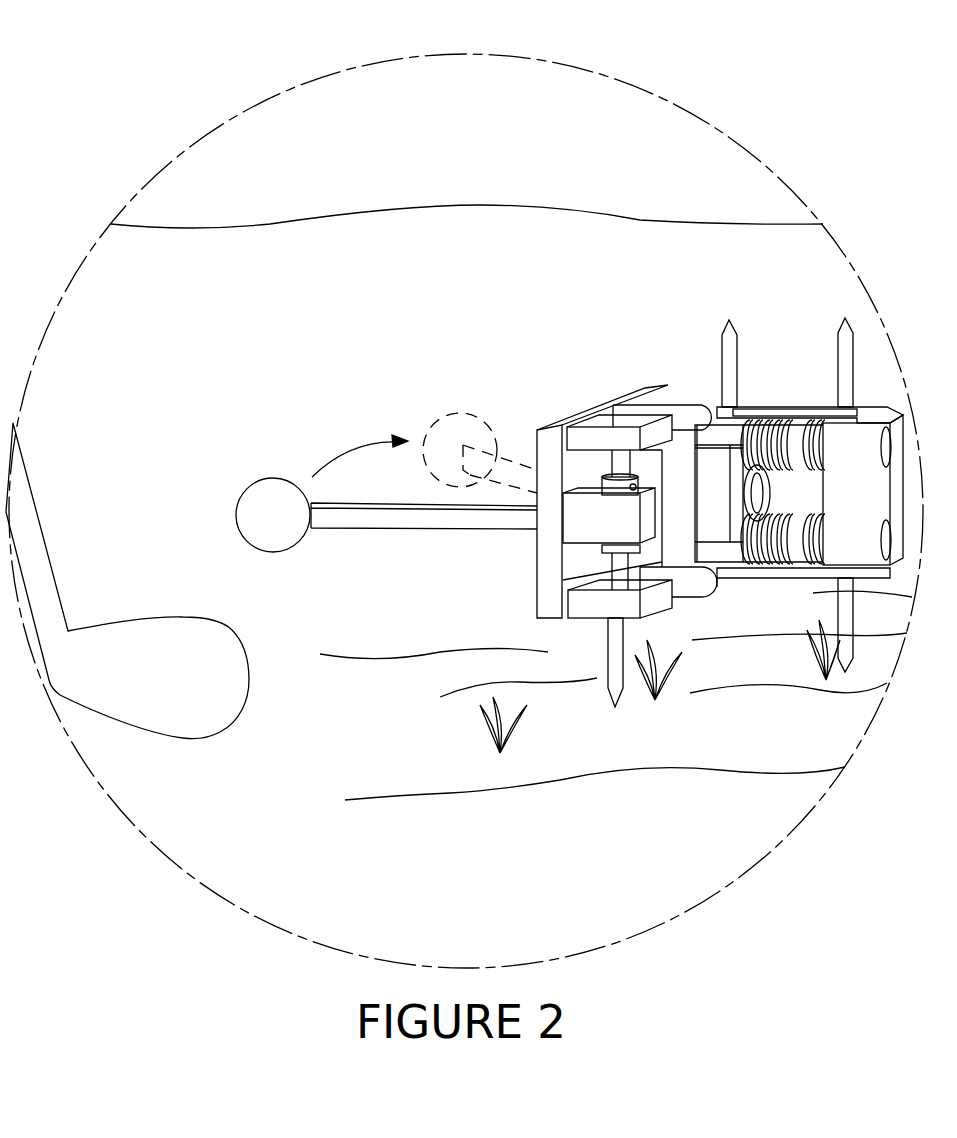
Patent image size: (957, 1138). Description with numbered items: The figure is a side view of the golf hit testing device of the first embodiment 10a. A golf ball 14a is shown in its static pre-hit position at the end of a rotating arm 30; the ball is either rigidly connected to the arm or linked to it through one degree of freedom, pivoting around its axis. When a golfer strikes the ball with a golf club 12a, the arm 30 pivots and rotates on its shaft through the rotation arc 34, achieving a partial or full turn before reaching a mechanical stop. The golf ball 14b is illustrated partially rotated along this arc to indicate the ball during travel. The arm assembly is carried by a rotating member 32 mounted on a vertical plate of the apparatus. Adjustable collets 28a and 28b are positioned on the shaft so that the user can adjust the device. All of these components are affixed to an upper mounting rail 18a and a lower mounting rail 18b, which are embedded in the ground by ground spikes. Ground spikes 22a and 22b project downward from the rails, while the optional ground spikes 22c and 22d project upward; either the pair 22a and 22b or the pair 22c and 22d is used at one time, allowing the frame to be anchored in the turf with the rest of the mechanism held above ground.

The first embodiment of present invention 10a is at (770, 90).
The golf club 12a is at (37, 553).
The golf ball in static pre-hit position 14a is at (270, 487).
The golf ball during travel 14b is at (462, 428).
The mounting rail 18a is at (785, 407).
The mounting rail 18b is at (800, 590).
The ground spike attached to mounting rail 22a is at (607, 667).
The ground spike attached to mounting rail 22b is at (842, 657).
The optional ground spike attached to mounting rail 22c is at (725, 338).
The optional ground spike attached to mounting rail 22d is at (840, 330).
The adjustment collet on shaft 28a is at (620, 487).
The adjustment collet on shaft 28b is at (585, 600).
The rotating arm 30 is at (425, 530).
The rotating member 32 is at (592, 522).
The rotation arc of rotating arm 34 is at (335, 462).